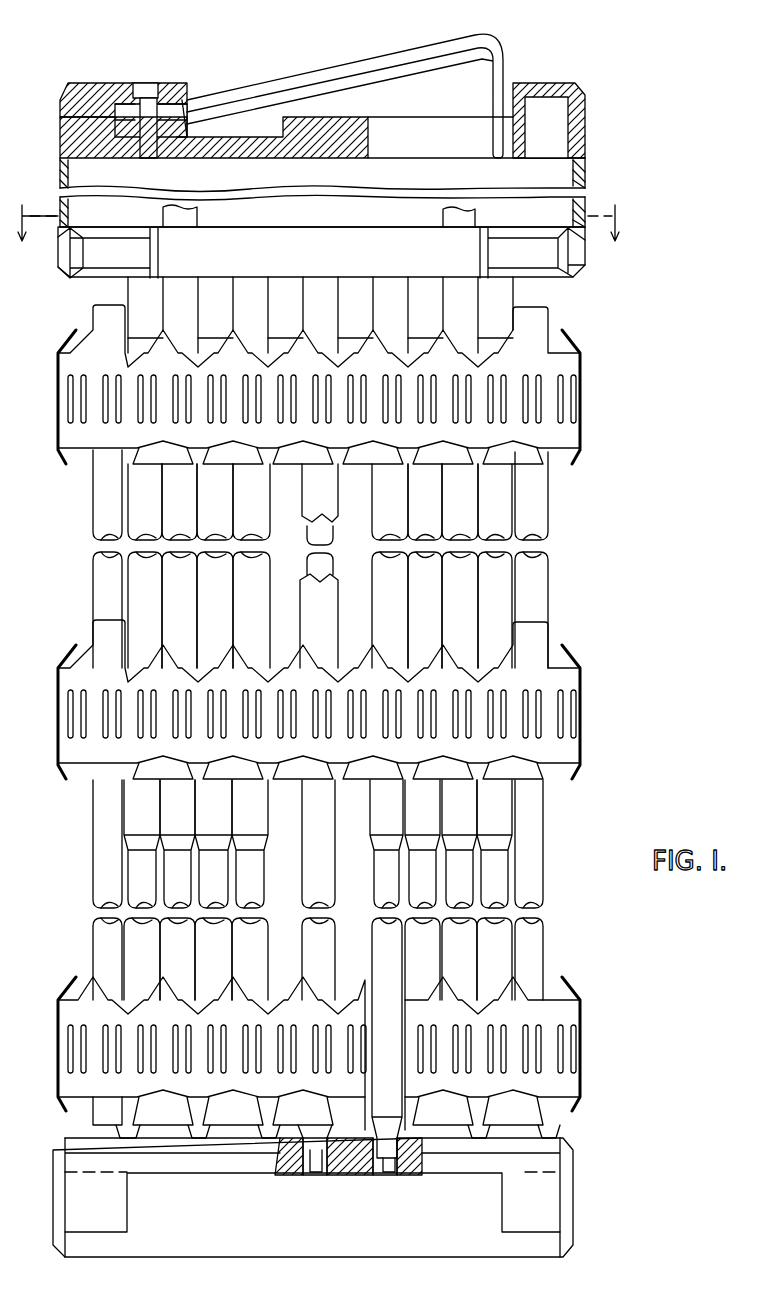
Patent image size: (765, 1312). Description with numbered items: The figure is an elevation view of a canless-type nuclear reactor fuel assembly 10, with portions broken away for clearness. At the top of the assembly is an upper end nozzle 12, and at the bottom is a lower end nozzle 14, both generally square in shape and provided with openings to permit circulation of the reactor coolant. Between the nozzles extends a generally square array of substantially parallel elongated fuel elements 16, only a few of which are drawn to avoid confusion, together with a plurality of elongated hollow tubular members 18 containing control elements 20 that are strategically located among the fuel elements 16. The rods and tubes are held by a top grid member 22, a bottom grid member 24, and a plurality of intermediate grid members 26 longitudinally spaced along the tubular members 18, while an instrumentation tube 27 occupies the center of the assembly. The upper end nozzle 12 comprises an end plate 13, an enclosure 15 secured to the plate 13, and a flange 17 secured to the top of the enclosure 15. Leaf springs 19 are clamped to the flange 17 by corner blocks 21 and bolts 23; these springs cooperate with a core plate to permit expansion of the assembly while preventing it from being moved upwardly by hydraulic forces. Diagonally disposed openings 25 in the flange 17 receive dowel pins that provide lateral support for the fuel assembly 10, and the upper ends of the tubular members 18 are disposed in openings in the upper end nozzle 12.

The fuel assembly 10 is at (50, 561).
The upper end nozzle 12 is at (352, 225).
The end plate 13 is at (255, 237).
The lower end nozzle 14 is at (83, 1158).
The enclosure 15 is at (60, 200).
The fuel elements 16 is at (98, 496).
The flange 17 is at (65, 142).
The tubular members 18 is at (173, 595).
The leaf springs 19 is at (335, 70).
The control elements 20 is at (163, 218).
The corner blocks 21 is at (90, 82).
The top grid member 22 is at (58, 392).
The bolts 23 is at (155, 82).
The bottom grid member 24 is at (583, 1048).
The openings 25 is at (557, 83).
The intermediate grid members 26 is at (58, 711).
The instrumentation tube 27 is at (320, 1147).